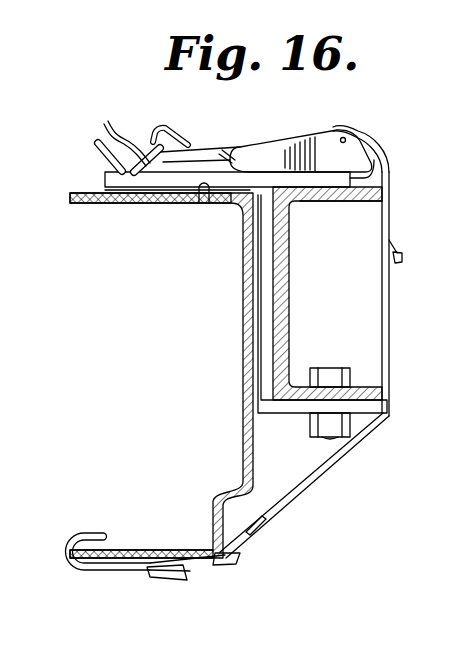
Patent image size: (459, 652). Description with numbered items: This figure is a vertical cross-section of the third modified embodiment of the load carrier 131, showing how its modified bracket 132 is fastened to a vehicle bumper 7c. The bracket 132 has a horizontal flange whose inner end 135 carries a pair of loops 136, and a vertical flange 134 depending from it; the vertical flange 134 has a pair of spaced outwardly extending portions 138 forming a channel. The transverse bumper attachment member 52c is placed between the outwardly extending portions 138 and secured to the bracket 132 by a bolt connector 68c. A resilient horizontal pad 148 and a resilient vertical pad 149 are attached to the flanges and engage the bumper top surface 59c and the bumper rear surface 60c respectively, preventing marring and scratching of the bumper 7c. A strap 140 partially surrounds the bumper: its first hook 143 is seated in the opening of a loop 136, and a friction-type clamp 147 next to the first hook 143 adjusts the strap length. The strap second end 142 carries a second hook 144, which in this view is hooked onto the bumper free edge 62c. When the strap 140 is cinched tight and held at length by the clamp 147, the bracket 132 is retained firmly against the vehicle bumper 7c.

The load carrier 131 is at (137, 105).
The bracket 132 is at (352, 126).
The vertical flange 134 is at (263, 283).
The inner end 135 is at (105, 179).
The loop 136 is at (104, 124).
The outwardly extending portion 138 is at (376, 168).
The strap 140 is at (382, 278).
The strap second end 142 is at (246, 551).
The first hook 143 is at (188, 128).
The second hook 144 is at (95, 534).
The friction-type clamp 147 is at (317, 137).
The horizontal pad 148 is at (123, 191).
The vertical pad 149 is at (255, 333).
The transverse bumper attachment member 52c is at (355, 203).
The bumper top surface 59c is at (203, 204).
The bumper rear surface 60c is at (134, 551).
The bumper free edge 62c is at (64, 556).
The bolt connector 68c is at (329, 369).
The vehicle bumper 7c is at (236, 560).